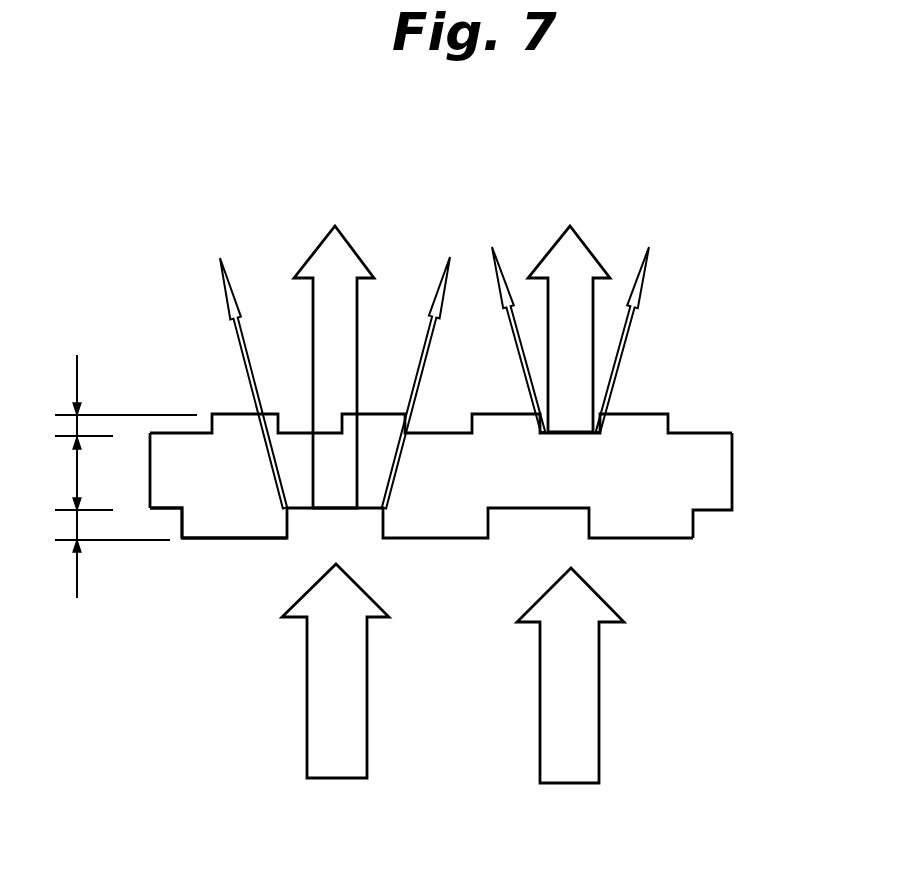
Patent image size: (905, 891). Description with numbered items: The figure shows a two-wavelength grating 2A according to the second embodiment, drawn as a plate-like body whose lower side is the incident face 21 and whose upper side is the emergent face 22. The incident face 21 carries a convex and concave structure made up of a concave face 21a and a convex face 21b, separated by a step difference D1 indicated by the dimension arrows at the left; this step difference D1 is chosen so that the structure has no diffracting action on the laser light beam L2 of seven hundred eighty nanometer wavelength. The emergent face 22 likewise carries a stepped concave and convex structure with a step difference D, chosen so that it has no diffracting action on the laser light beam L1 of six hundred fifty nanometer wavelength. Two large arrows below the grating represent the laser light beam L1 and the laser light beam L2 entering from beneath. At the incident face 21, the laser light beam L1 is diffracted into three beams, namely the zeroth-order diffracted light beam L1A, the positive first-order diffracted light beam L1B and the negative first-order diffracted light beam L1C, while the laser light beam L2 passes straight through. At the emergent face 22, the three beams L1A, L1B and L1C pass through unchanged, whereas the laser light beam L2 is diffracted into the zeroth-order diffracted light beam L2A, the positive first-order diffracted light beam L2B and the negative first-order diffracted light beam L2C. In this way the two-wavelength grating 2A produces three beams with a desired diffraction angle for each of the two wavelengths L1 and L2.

The two-wavelength grating 2A is at (733, 472).
The emergent face 22 is at (687, 430).
The incident face 21 is at (697, 510).
The concave face 21a is at (160, 512).
The convex face 21b is at (230, 538).
The laser light beam L1 is at (307, 735).
The laser light beam L2 is at (600, 723).
The zeroth-order diffracted light beam L1A is at (315, 248).
The positive first-order diffracted light beam L1B is at (233, 283).
The negative first-order diffracted light beam L1C is at (433, 283).
The zeroth-order diffracted light beam L2A is at (550, 243).
The positive first-order diffracted light beam L2B is at (498, 260).
The negative first-order diffracted light beam L2C is at (650, 270).
The step difference D is at (112, 402).
The step difference D1 is at (91, 517).